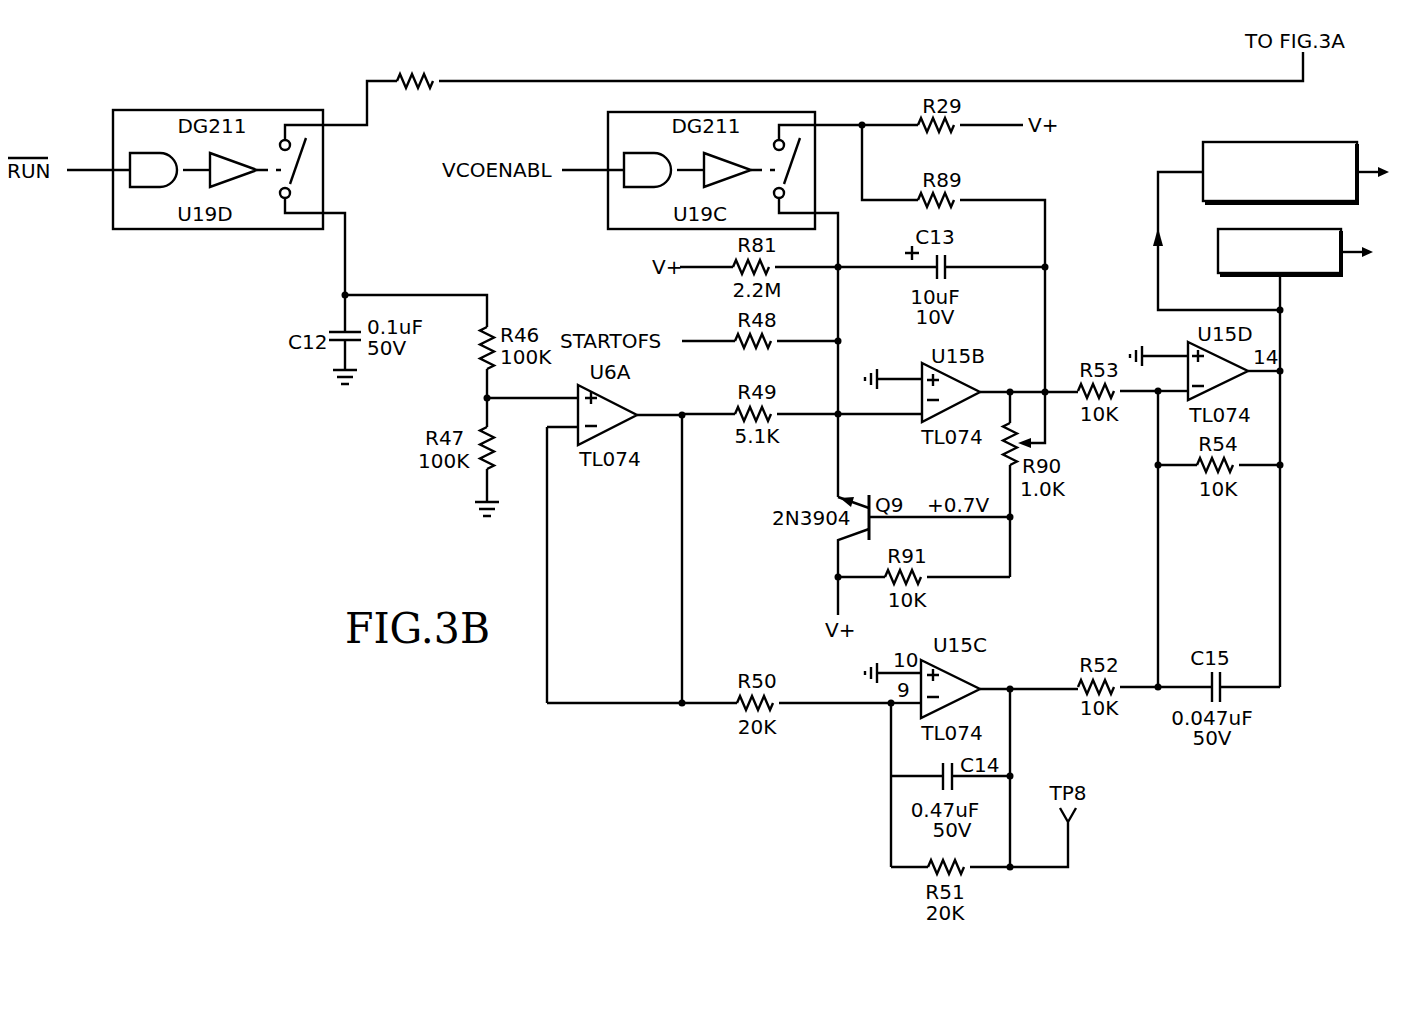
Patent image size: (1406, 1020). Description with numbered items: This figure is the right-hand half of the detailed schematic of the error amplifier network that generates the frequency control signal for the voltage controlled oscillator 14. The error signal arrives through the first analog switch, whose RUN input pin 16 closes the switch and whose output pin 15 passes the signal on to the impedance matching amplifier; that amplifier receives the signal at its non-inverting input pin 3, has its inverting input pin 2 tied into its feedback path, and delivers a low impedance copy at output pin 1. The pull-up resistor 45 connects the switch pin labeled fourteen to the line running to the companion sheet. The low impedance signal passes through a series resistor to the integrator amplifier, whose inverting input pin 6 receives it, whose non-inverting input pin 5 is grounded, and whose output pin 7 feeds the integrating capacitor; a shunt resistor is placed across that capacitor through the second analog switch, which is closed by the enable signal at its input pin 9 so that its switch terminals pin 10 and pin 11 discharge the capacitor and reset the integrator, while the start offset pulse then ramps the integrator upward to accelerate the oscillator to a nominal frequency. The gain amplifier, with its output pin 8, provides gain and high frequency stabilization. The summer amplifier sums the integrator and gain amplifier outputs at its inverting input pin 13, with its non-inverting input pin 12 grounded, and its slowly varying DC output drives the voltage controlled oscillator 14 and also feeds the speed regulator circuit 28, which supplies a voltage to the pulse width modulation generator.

The speed regulator circuit 28 is at (1358, 141).
The voltage controlled oscillator 14 is at (1300, 276).
The RUN input pin of switch U19D 16 is at (98, 156).
The output pin of switch U19D 15 is at (319, 241).
The resistor R45 45 is at (794, 95).
The VCOENABL input pin of switch U19C 9 is at (593, 157).
The pin 10 of switch U19C 10 is at (848, 120).
The pin 11 of switch U19C 11 is at (813, 343).
The output pin 1 of U6A 1 is at (659, 401).
The inverting input pin 2 of U6A 2 is at (562, 554).
The non-inverting input pin 3 of U6A 3 is at (532, 385).
The non-inverting input pin 5 of U15B 5 is at (893, 371).
The inverting input pin 6 of U15B 6 is at (880, 401).
The output pin 7 of U15B 7 is at (1029, 379).
The output pin 8 of U15C 8 is at (1029, 676).
The FET drive sequencing and power sequencing network 12 is at (1159, 348).
The inverting input pin 13 of U15D 13 is at (1173, 379).